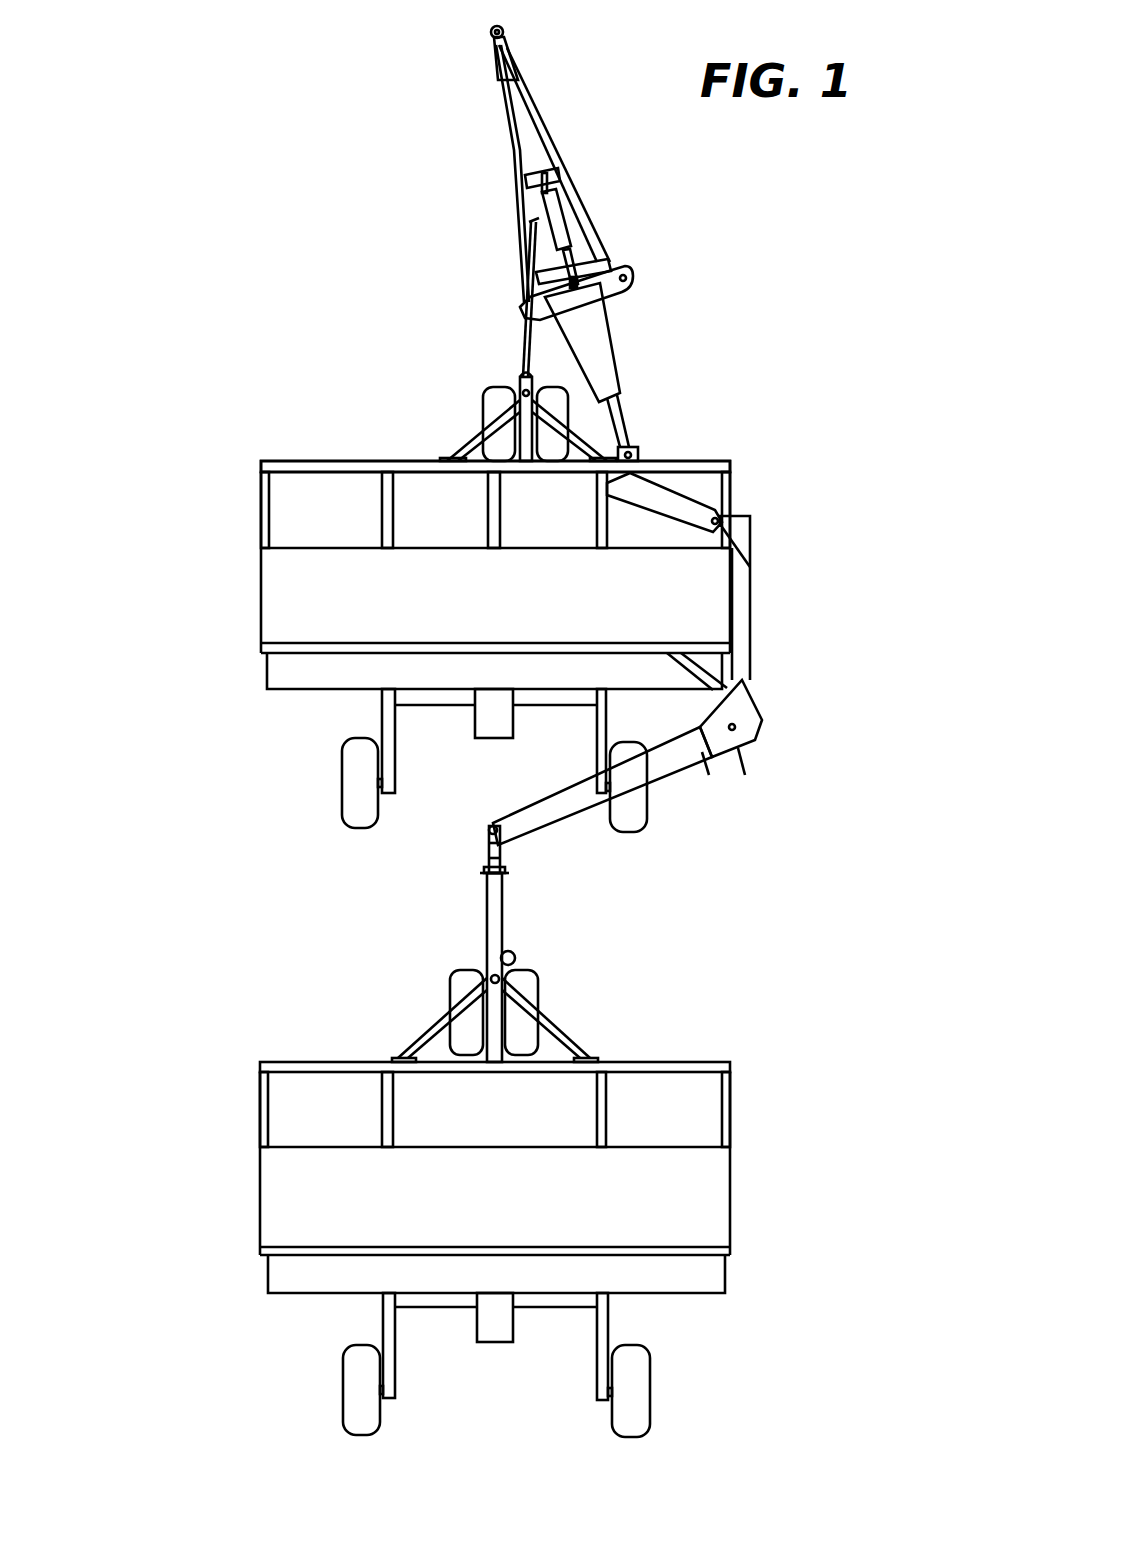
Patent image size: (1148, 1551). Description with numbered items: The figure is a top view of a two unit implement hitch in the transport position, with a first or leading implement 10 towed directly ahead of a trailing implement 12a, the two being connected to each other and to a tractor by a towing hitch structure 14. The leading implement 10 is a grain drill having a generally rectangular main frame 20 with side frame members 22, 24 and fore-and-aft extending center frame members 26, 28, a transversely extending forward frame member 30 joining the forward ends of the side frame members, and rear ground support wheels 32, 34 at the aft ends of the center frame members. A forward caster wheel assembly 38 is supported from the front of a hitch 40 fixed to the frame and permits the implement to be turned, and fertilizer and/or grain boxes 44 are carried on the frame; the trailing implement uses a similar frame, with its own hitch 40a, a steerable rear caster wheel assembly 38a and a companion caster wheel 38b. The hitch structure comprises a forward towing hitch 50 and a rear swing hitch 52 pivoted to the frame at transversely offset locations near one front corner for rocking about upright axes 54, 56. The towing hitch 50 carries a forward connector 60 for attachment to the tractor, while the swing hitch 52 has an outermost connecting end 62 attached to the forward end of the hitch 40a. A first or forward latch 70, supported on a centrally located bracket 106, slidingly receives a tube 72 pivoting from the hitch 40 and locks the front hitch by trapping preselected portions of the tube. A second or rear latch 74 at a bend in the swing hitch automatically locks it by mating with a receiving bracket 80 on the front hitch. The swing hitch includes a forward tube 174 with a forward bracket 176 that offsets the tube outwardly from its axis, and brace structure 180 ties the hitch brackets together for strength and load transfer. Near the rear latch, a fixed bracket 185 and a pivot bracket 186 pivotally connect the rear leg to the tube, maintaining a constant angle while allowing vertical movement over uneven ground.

The first or leading implement 10 is at (210, 575).
The second trailer assembly 12a is at (252, 1148).
The towing hitch structure 14 is at (788, 598).
The main frame 20 is at (732, 460).
The side frame member 22 is at (736, 483).
The side frame member 24 is at (261, 507).
The center frame member 26 is at (397, 505).
The center frame member 28 is at (596, 510).
The forward frame member 30 is at (347, 462).
The rear ground support wheel 32 is at (341, 757).
The rear ground support wheel 34 is at (649, 810).
The forward caster wheel assembly 38 is at (478, 393).
The rear caster wheel assembly 38a is at (464, 965).
The gas tank 38b is at (538, 978).
The hitch 40 is at (500, 373).
The hitch 40a is at (512, 937).
The fertilizer and/or grain boxes 44 is at (264, 613).
The forward towing hitch 50 is at (613, 262).
The rear swing hitch 52 is at (758, 704).
The upright axis 54 is at (636, 447).
The upright axis 56 is at (726, 520).
The forward connector 60 is at (491, 35).
The connecting end 62 is at (489, 826).
The first or forward latch 70 is at (512, 292).
The tube 72 is at (524, 340).
The second or rear latch 74 is at (664, 762).
The receiving bracket 80 is at (650, 272).
The bracket 106 is at (519, 307).
The forward tube 174 is at (753, 637).
The forward bracket 176 is at (752, 547).
The brace structure 180 is at (678, 528).
The fixed bracket 185 is at (738, 752).
The pivot bracket 186 is at (708, 777).